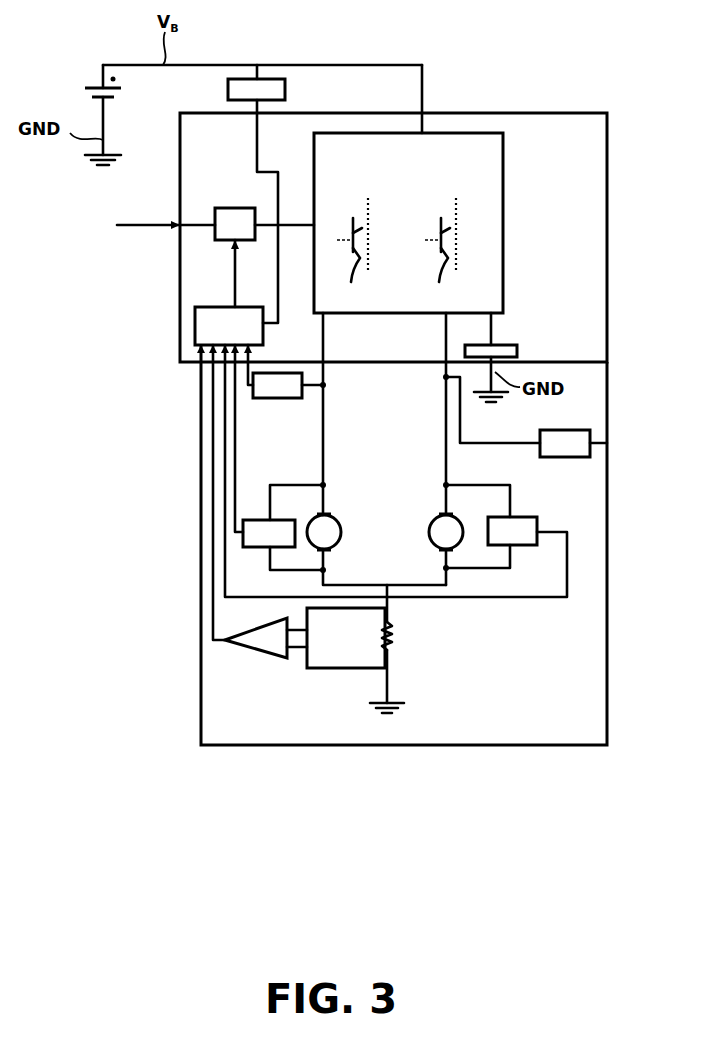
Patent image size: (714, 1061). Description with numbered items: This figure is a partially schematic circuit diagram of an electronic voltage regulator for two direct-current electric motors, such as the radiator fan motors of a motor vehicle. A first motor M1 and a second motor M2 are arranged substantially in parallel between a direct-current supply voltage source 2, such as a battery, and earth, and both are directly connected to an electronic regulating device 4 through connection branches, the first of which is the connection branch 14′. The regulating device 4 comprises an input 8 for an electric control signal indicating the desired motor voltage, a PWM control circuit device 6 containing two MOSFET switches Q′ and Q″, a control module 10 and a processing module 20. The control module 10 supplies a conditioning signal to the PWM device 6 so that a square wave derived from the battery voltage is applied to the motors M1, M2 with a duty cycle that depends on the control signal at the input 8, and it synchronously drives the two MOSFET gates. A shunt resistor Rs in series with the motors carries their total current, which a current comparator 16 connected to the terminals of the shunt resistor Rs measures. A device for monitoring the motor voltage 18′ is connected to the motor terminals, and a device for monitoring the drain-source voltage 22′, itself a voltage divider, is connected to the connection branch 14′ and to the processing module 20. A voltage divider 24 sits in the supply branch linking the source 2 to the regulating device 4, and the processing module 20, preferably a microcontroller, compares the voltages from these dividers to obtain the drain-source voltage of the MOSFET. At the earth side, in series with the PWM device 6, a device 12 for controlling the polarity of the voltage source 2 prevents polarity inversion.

The direct-current supply voltage source 2 is at (97, 88).
The electronic regulating device 4 is at (607, 322).
The PWM control circuit device 6 is at (503, 285).
The input 8 is at (160, 223).
The control module 10 is at (235, 208).
The device for controlling the polarity of the voltage source 12 is at (518, 349).
The first connection branch 14′ is at (328, 382).
The current comparator 16 is at (278, 663).
The device for monitoring the motor voltage 18′ is at (262, 518).
The processing module 20 is at (194, 338).
The device for monitoring the drain-source voltage 22′ is at (270, 398).
The voltage divider 24 is at (286, 96).
The first direct-current electric motor M1 is at (340, 519).
The second direct-current electric motor M2 is at (424, 533).
The shunt resistor Rs is at (394, 638).